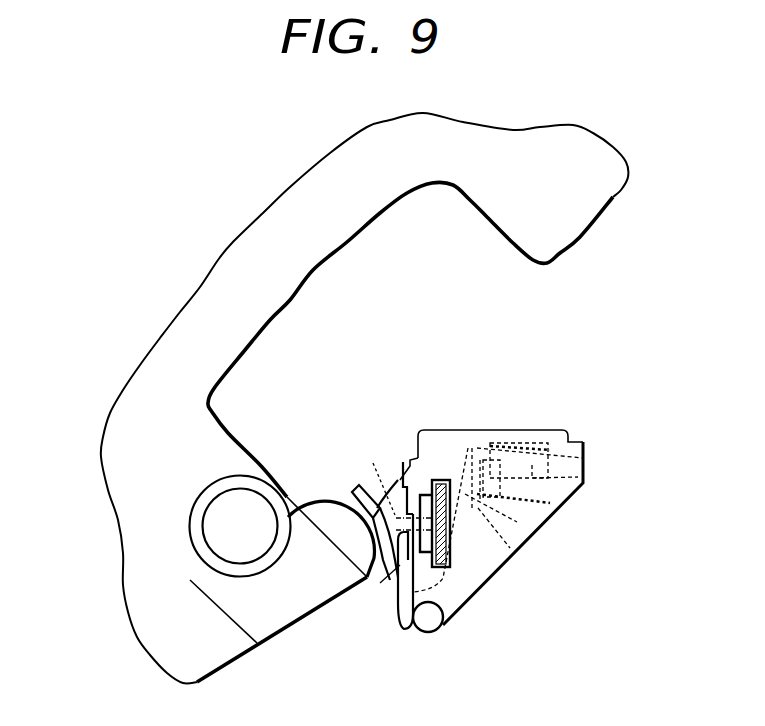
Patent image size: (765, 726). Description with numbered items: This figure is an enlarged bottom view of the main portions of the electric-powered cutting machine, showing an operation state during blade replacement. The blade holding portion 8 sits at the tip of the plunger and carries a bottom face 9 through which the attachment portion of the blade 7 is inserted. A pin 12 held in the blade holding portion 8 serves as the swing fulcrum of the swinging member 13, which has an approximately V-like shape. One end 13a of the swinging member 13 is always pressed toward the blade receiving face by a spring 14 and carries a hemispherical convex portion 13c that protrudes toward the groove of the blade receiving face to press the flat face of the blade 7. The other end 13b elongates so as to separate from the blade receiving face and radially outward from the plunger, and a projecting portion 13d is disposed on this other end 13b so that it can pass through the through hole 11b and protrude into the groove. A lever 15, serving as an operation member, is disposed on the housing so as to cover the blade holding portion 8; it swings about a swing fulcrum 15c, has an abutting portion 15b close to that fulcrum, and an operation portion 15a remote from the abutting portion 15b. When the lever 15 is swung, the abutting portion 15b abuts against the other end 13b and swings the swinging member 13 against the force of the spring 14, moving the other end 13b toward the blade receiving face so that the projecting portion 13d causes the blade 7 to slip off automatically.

The blade 7 is at (443, 479).
The blade holding portion 8 is at (488, 430).
The bottom face 9 is at (380, 583).
The through hole 11b is at (356, 488).
The pin 12 is at (437, 627).
The swinging member 13 is at (402, 604).
The one end 13a is at (517, 522).
The other end 13b is at (372, 566).
The convex portion 13c is at (510, 548).
The projecting portion 13d is at (403, 462).
The spring 14 is at (527, 442).
The lever 15 is at (337, 180).
The operation portion 15a is at (533, 147).
The abutting portion 15b is at (343, 517).
The swing fulcrum 15c is at (243, 502).